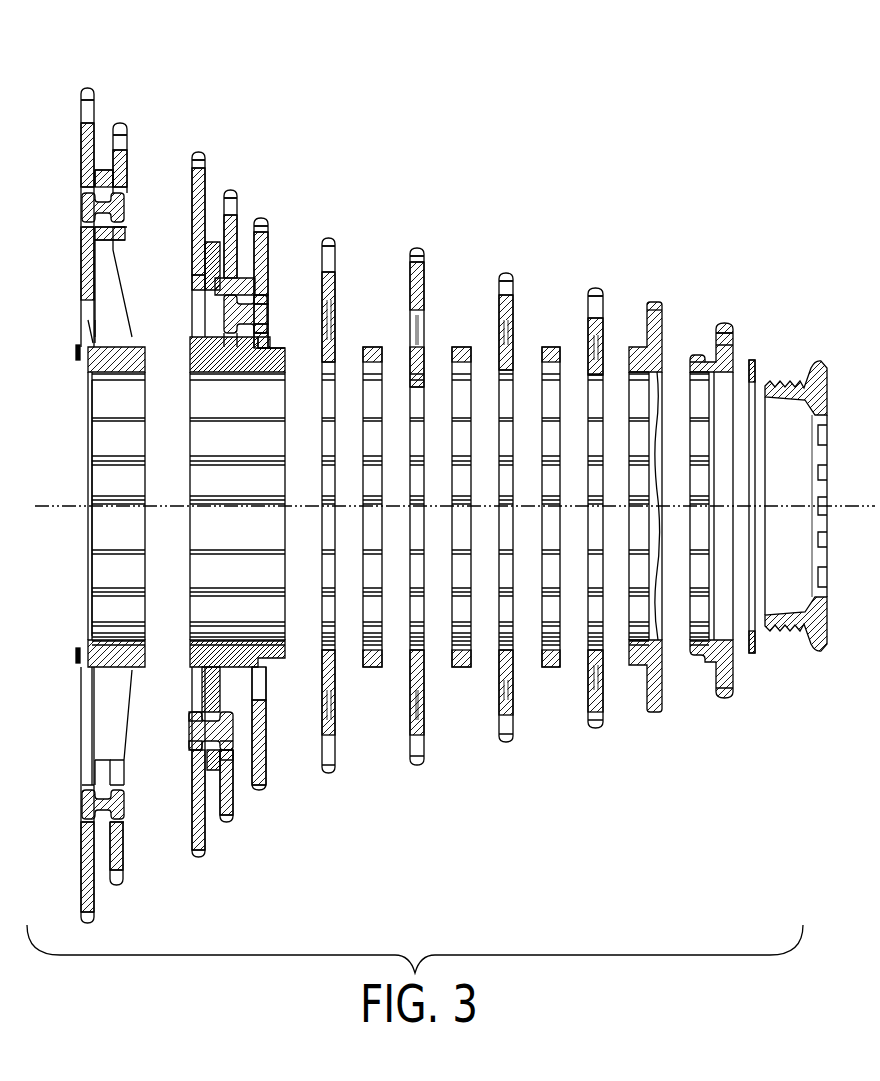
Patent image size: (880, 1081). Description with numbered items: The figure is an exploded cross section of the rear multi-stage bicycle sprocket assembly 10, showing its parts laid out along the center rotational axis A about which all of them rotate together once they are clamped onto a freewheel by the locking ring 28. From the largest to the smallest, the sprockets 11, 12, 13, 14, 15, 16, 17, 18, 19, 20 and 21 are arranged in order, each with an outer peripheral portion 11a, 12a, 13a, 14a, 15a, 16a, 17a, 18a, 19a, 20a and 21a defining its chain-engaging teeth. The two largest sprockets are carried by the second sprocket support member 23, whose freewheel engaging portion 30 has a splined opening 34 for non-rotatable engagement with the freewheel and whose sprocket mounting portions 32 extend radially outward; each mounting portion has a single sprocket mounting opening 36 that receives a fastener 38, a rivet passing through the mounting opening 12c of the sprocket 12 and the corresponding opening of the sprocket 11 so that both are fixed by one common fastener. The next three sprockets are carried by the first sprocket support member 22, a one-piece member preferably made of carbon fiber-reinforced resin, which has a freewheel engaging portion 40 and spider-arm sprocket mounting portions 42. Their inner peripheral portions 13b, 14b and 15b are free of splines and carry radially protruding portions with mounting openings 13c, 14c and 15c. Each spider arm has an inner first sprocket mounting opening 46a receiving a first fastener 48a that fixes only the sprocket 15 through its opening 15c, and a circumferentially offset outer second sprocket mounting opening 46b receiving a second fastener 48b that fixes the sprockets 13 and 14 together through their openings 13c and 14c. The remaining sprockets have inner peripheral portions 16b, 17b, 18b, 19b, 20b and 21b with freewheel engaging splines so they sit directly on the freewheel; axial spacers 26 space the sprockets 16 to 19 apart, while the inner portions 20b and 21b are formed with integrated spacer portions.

The bicycle sprocket assembly 10 is at (575, 150).
The sprocket 11 is at (88, 86).
The outer peripheral portion 11a is at (82, 112).
The sprocket 12 is at (121, 120).
The outer peripheral portion 12a is at (126, 146).
The mounting opening 12c is at (120, 188).
The sprocket 13 is at (200, 150).
The outer peripheral portion 13a is at (205, 168).
The inner peripheral portion 13b is at (195, 270).
The mounting opening 13c is at (190, 730).
The sprocket 14 is at (233, 188).
The outer peripheral portion 14a is at (240, 213).
The inner peripheral portion 14b is at (215, 283).
The mounting opening 14c is at (232, 733).
The sprocket 15 is at (270, 216).
The outer peripheral portion 15a is at (272, 240).
The inner peripheral portion 15b is at (260, 352).
The mounting opening 15c is at (268, 303).
The sprocket 16 is at (336, 235).
The outer peripheral portion 16a is at (338, 262).
The inner peripheral portion 16b is at (323, 390).
The sprocket 17 is at (420, 246).
The outer peripheral portion 17a is at (426, 268).
The inner peripheral portion 17b is at (410, 395).
The sprocket 18 is at (506, 272).
The outer peripheral portion 18a is at (515, 285).
The inner peripheral portion 18b is at (500, 380).
The sprocket 19 is at (600, 286).
The outer peripheral portion 19a is at (588, 305).
The inner peripheral portion 19b is at (590, 385).
The sprocket 20 is at (655, 300).
The outer peripheral portion 20a is at (663, 318).
The inner peripheral portion 20b is at (632, 385).
The sprocket 21 is at (727, 322).
The outer peripheral portion 21a is at (735, 348).
The inner peripheral portion 21b is at (707, 355).
The first sprocket support member 22 is at (188, 353).
The second sprocket support member 23 is at (92, 327).
The axial spacers 26 is at (372, 668).
The locking ring 28 is at (815, 360).
The freewheel engaging portion 30 is at (90, 357).
The sprocket mounting portions 32 is at (100, 168).
The splined opening 34 is at (105, 376).
The sprocket mounting opening 36 is at (100, 215).
The fastener 38 is at (82, 200).
The freewheel engaging portion 40 is at (262, 347).
The sprocket mounting portions 42 is at (210, 243).
The first sprocket mounting opening 46a is at (228, 315).
The second sprocket mounting opening 46b is at (214, 770).
The first fastener 48a is at (262, 305).
The second fastener 48b is at (190, 742).
The center rotational axis A is at (52, 506).